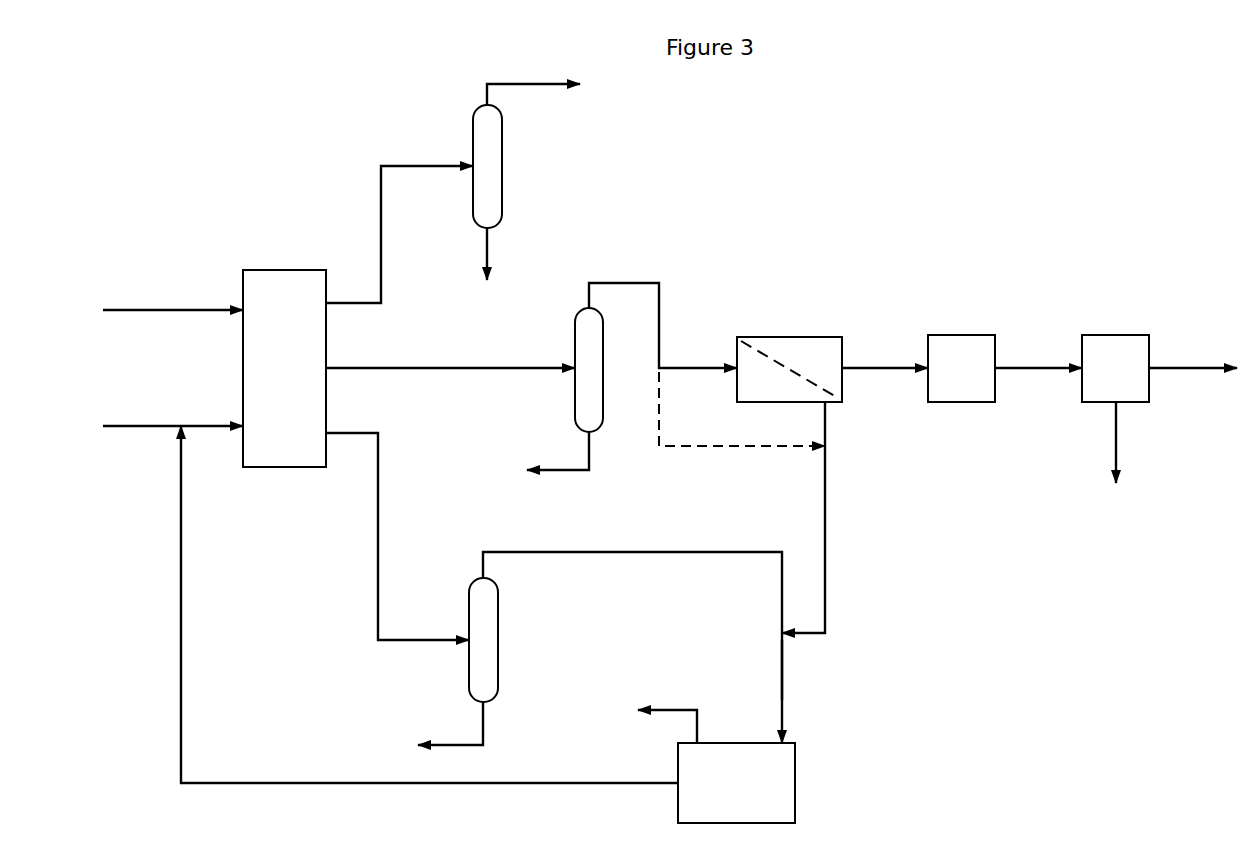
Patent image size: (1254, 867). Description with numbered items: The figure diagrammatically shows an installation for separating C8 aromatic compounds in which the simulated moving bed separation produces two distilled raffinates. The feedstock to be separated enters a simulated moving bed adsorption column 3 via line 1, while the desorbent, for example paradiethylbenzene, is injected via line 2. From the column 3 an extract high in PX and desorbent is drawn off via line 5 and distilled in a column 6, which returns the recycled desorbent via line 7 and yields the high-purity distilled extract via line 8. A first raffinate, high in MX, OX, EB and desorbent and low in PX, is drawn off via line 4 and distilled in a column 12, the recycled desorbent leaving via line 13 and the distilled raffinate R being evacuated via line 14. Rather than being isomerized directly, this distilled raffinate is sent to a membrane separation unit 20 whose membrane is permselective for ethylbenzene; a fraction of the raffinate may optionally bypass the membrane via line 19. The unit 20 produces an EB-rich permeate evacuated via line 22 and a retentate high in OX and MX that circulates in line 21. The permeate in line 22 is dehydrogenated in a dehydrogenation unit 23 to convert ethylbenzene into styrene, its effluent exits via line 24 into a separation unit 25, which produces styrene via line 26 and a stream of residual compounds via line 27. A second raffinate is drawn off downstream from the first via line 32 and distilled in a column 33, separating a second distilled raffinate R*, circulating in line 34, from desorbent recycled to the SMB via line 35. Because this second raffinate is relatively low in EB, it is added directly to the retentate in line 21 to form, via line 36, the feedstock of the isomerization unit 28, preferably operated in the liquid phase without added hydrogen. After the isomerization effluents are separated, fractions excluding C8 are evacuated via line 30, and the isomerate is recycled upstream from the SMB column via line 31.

The feedstock line 1 is at (153, 425).
The desorbent line 2 is at (172, 309).
The simulated moving bed adsorption column 3 is at (243, 368).
The raffinate line 4 is at (430, 367).
The extract line 5 is at (381, 228).
The extract distillation column 6 is at (473, 198).
The recycled desorbent line 7 is at (490, 245).
The distilled extract line 8 is at (535, 85).
The raffinate distillation column 12 is at (575, 397).
The recycled desorbent line 13 is at (568, 471).
The distilled raffinate line 14 is at (625, 282).
The bypass line 19 is at (730, 447).
The membrane separation unit 20 is at (790, 336).
The retentate line 21 is at (827, 527).
The permeate line 22 is at (878, 367).
The dehydrogenation unit 23 is at (963, 335).
The dehydrogenation effluent line 24 is at (1030, 367).
The separation unit 25 is at (1118, 335).
The styrene line 26 is at (1185, 367).
The residual compounds line 27 is at (1118, 433).
The isomerization unit 28 is at (796, 783).
The non-C8 fractions line 30 is at (672, 709).
The isomerate recycle line 31 is at (283, 784).
The second raffinate line 32 is at (378, 545).
The second raffinate distillation column 33 is at (498, 612).
The second distilled raffinate line 34 is at (660, 551).
The recycled desorbent line 35 is at (486, 718).
The isomerization feed line 36 is at (784, 685).